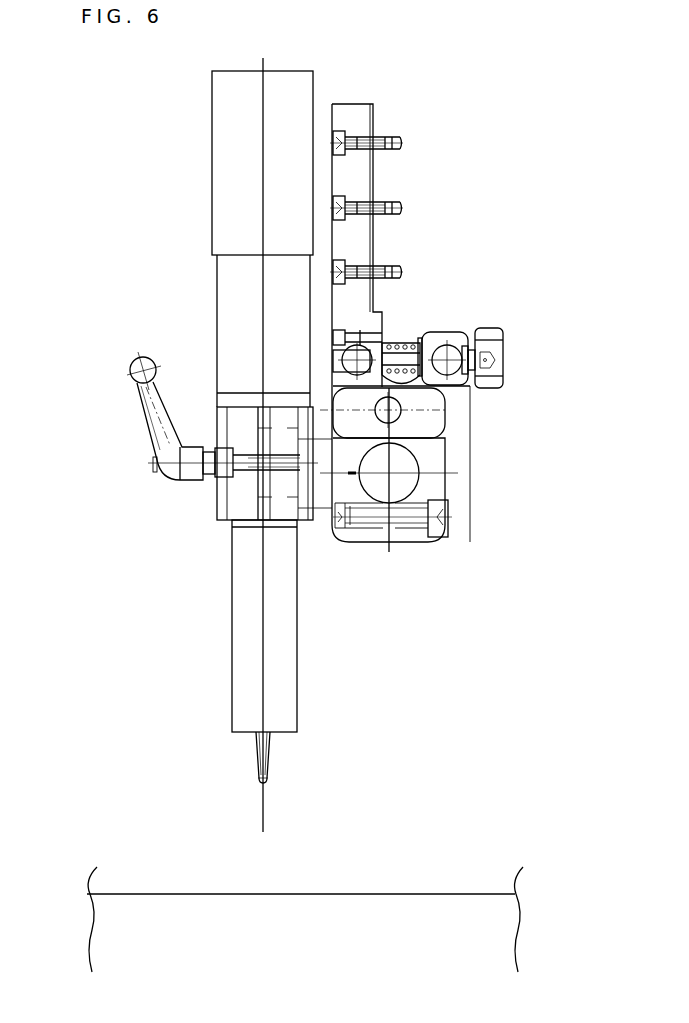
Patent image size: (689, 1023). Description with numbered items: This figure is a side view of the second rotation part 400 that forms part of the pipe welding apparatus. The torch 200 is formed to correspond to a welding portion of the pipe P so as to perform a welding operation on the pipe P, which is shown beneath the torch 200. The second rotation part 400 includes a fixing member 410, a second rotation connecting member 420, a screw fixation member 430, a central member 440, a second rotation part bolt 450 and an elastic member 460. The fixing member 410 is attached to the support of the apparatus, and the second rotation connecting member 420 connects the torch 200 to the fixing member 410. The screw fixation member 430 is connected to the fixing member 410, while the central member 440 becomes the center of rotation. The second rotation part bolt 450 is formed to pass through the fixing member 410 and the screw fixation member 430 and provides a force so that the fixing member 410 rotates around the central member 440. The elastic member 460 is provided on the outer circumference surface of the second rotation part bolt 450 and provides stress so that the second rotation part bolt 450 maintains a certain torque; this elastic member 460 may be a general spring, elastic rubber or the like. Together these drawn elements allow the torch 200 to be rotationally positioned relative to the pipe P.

The torch 200 is at (226, 148).
The second rotation part 400 is at (195, 52).
The fixing member 410 is at (366, 178).
The second rotation connecting member 420 is at (450, 464).
The screw fixation member 430 is at (458, 407).
The central member 440 is at (450, 424).
The second rotation part bolt 450 is at (500, 358).
The elastic member 460 is at (403, 343).
The pipe P is at (437, 894).